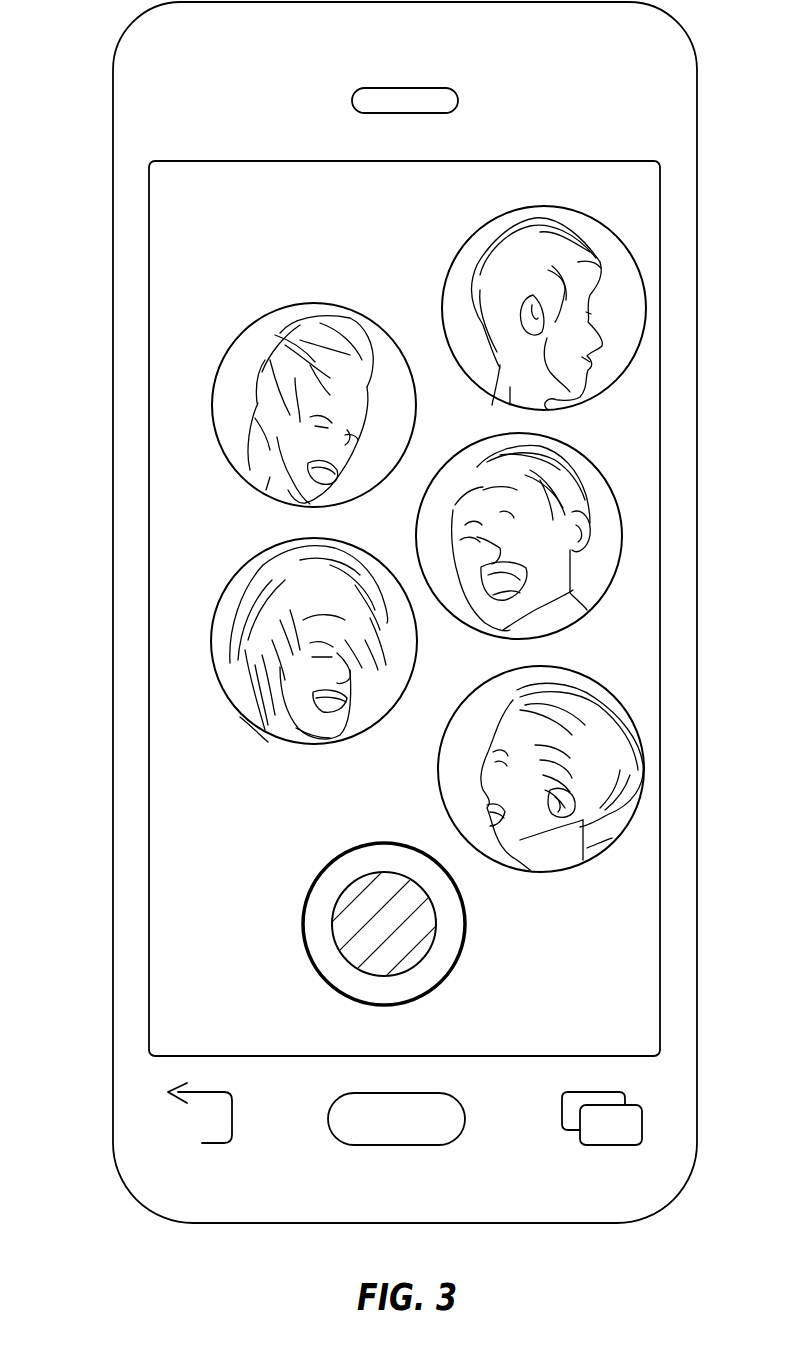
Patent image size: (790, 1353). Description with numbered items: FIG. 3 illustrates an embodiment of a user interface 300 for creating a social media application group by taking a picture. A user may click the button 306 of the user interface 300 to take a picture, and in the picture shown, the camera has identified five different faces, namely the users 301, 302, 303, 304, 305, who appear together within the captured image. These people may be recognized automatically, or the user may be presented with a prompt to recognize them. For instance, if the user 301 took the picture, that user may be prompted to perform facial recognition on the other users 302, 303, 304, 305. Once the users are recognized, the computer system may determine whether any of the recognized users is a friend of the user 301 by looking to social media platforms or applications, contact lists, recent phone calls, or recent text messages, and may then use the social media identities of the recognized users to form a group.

The user interface 300 is at (180, 226).
The user 301 is at (537, 206).
The user 302 is at (306, 302).
The user 303 is at (570, 447).
The user 304 is at (260, 553).
The user 305 is at (565, 668).
The button 306 is at (420, 934).